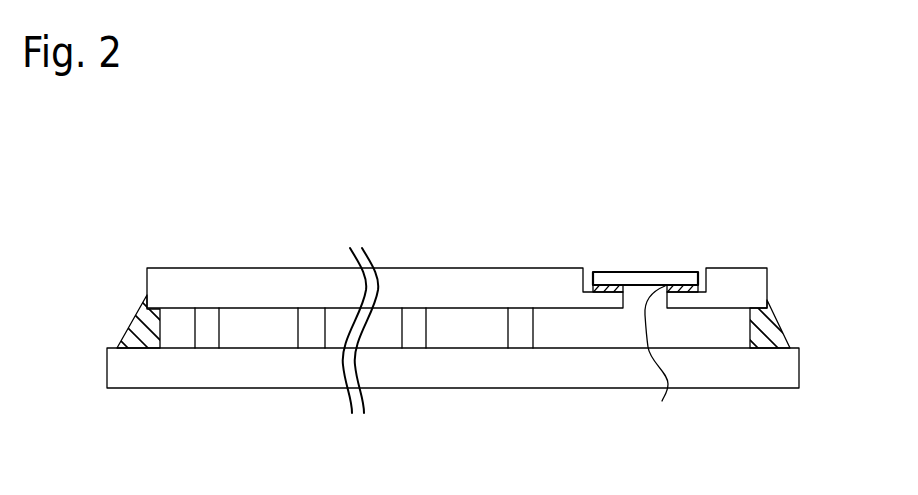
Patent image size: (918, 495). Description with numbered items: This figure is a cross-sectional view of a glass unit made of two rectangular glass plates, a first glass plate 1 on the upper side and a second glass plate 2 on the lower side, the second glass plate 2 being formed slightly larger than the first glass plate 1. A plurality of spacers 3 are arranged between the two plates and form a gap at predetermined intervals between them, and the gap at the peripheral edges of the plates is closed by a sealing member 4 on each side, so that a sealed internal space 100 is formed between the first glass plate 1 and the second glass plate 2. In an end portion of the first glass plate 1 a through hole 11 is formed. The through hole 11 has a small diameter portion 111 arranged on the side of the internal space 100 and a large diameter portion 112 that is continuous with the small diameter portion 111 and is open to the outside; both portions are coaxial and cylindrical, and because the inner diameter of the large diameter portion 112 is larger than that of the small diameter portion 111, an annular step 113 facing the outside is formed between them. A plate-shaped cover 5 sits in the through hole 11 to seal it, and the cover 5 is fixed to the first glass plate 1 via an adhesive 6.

The first glass plate 1 is at (220, 281).
The second glass plate 2 is at (407, 388).
The spacers 3 is at (312, 332).
The sealing member 4 is at (138, 316).
The cover 5 is at (632, 276).
The adhesive 6 is at (656, 360).
The through hole 11 is at (665, 318).
The internal space 100 is at (482, 340).
The small diameter portion 111 is at (623, 308).
The large diameter portion 112 is at (592, 281).
The annular step 113 is at (703, 284).